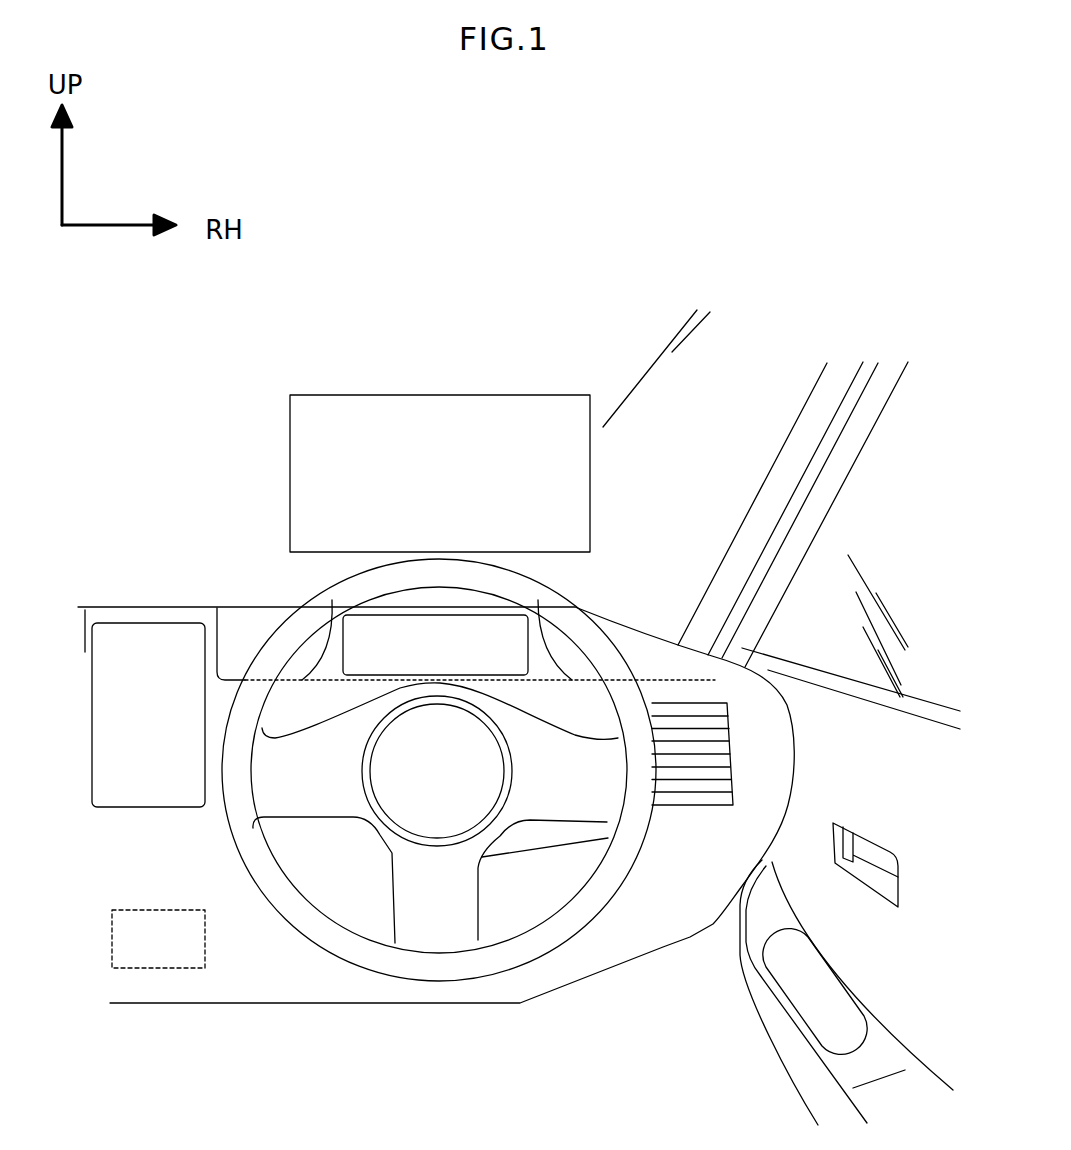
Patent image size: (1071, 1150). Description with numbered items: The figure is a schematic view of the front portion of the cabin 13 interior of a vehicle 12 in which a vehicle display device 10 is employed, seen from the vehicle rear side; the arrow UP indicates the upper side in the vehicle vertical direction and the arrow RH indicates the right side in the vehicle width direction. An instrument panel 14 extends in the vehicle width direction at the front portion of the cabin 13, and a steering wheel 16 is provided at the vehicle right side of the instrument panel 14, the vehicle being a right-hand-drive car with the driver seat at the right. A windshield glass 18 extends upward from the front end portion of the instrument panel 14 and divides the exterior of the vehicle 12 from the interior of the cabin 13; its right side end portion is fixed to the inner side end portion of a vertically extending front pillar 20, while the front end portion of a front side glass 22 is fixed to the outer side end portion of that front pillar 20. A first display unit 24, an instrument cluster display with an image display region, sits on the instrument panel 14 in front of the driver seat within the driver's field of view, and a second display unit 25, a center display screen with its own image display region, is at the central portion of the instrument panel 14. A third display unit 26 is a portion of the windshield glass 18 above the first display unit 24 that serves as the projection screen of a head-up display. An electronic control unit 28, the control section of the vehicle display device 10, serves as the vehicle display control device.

The vehicle display device 10 is at (381, 353).
The vehicle 12 is at (423, 250).
The cabin 13 is at (403, 1123).
The instrument panel 14 is at (637, 960).
The steering wheel 16 is at (628, 650).
The windshield glass 18 is at (727, 482).
The front pillar 20 is at (803, 408).
The front side glass 22 is at (930, 650).
The first display unit 24 is at (380, 637).
The second display unit 25 is at (150, 783).
The third display unit 26 is at (443, 395).
The electronic control unit 28 is at (150, 968).